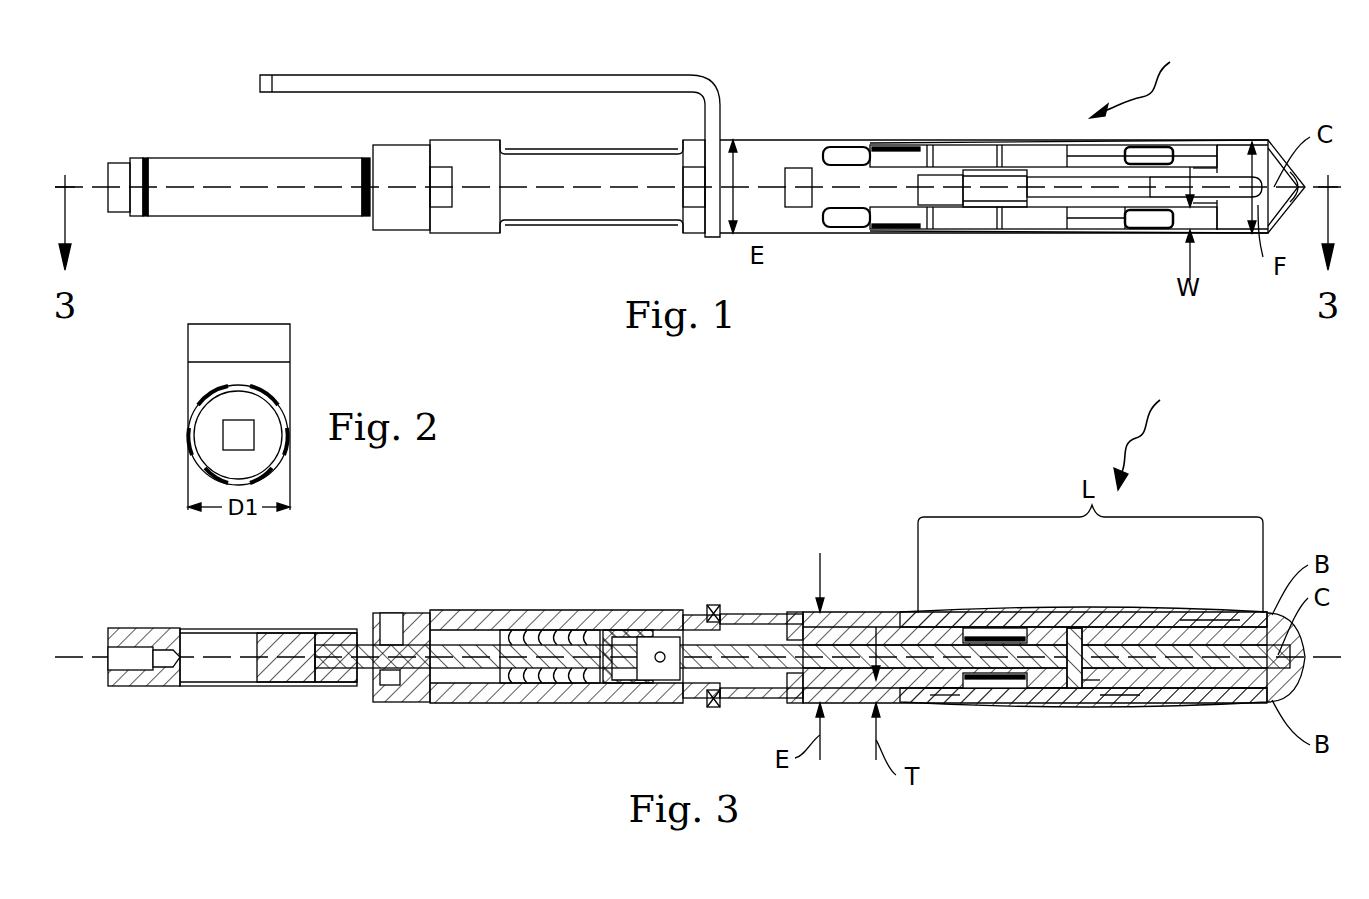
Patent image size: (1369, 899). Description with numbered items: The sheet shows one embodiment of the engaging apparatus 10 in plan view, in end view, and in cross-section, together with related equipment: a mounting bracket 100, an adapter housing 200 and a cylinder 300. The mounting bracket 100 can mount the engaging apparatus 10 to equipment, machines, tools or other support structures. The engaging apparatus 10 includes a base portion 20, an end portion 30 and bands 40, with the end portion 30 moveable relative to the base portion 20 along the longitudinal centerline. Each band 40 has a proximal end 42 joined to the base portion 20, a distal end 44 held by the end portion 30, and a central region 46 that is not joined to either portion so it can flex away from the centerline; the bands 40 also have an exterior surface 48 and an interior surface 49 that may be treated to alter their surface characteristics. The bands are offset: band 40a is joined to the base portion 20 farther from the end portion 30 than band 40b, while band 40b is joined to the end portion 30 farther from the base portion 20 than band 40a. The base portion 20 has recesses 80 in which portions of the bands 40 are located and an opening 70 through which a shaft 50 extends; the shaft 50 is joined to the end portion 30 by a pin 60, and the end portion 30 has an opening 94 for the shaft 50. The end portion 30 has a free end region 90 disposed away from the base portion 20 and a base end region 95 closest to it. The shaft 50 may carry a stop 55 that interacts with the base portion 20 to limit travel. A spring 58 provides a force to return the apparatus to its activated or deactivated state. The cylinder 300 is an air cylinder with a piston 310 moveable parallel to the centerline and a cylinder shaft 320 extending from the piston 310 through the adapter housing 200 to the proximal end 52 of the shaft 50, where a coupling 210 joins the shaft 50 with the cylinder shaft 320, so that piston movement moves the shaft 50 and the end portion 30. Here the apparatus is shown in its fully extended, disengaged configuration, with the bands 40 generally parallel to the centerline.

In FIG. 1, the engaging apparatus 10 is at (1143, 82).
In FIG. 3, the engaging apparatus 10 is at (1153, 436).
In FIG. 1, the base portion 20 is at (768, 152).
In FIG. 3, the base portion 20 is at (840, 692).
In FIG. 1, the end portion 30 is at (1237, 215).
In FIG. 3, the end portion 30 is at (1193, 680).
In FIG. 1, the bands 40 is at (1044, 152).
In FIG. 3, the bands 40 is at (1160, 617).
In FIG. 1, the band 40a is at (836, 218).
In FIG. 1, the band 40b is at (926, 180).
In FIG. 1, the proximal end 42 is at (836, 150).
In FIG. 3, the proximal end 42 is at (943, 698).
In FIG. 1, the distal end 44 is at (1147, 220).
In FIG. 3, the distal end 44 is at (1208, 625).
In FIG. 1, the central region 46 is at (989, 152).
In FIG. 3, the central region 46 is at (1083, 697).
In FIG. 1, the exterior surface 48 is at (1093, 220).
In FIG. 3, the exterior surface 48 is at (1117, 695).
In FIG. 3, the interior surface 49 is at (1062, 698).
In FIG. 3, the shaft 50 is at (858, 648).
In FIG. 3, the proximal end 52 is at (651, 612).
In FIG. 3, the stop 55 is at (1025, 633).
In FIG. 3, the spring 58 is at (537, 678).
In FIG. 3, the pin 60 is at (1068, 633).
In FIG. 3, the opening 70 is at (767, 640).
In FIG. 1, the recesses 80 is at (896, 212).
In FIG. 3, the recesses 80 is at (925, 702).
In FIG. 1, the free end region 90 is at (1273, 165).
In FIG. 2, the opening 94 is at (223, 434).
In FIG. 1, the base end region 95 is at (1181, 157).
In FIG. 1, the mounting bracket 100 is at (283, 85).
In FIG. 2, the mounting bracket 100 is at (278, 345).
In FIG. 1, the adapter housing 200 is at (533, 203).
In FIG. 3, the adapter housing 200 is at (538, 610).
In FIG. 3, the coupling 210 is at (660, 680).
In FIG. 1, the cylinder 300 is at (262, 203).
In FIG. 3, the cylinder 300 is at (148, 674).
In FIG. 3, the piston 310 is at (287, 676).
In FIG. 3, the cylinder shaft 320 is at (333, 672).